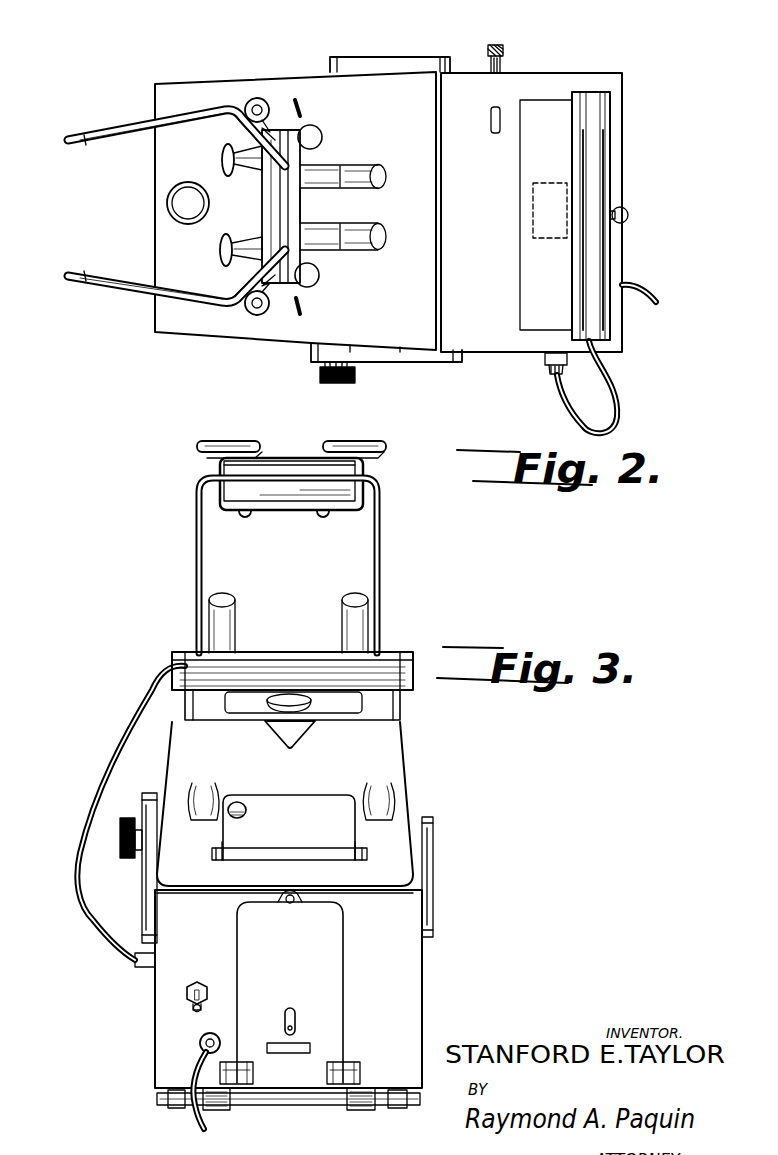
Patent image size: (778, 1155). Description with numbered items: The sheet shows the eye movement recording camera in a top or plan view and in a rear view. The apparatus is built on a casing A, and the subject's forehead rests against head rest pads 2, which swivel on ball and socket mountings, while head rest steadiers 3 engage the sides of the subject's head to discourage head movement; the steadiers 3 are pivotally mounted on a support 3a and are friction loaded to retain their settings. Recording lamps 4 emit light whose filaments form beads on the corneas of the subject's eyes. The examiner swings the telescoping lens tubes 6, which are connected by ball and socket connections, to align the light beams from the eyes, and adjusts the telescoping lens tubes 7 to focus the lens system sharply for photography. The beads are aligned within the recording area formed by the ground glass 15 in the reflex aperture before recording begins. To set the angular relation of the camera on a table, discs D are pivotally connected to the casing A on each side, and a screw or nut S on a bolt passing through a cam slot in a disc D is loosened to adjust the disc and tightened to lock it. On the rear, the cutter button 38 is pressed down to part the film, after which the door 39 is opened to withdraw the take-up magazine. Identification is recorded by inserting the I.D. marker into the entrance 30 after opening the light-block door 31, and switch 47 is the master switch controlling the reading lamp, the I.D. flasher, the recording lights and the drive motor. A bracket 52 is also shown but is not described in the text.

In FIG. 2, the disc D is at (392, 66).
In FIG. 3, the disc D is at (148, 878).
In FIG. 2, the casing A is at (381, 313).
In FIG. 3, the casing A is at (401, 863).
In FIG. 2, the screw or nut S is at (318, 375).
In FIG. 3, the screw or nut S is at (128, 817).
In FIG. 2, the head rest pad 2 is at (221, 157).
In FIG. 3, the head rest pad 2 is at (321, 524).
In FIG. 2, the head rest steadier 3 is at (116, 127).
In FIG. 3, the head rest steadier 3 is at (225, 442).
In FIG. 2, the support 3a is at (278, 196).
In FIG. 3, the support 3a is at (283, 468).
In FIG. 2, the recording lamp 4 is at (316, 133).
In FIG. 3, the recording lamp 4 is at (347, 613).
In FIG. 2, the telescoping lens tube 6 is at (357, 176).
In FIG. 2, the telescoping lens tube 7 is at (318, 186).
In FIG. 2, the ground glass 15 is at (550, 210).
In FIG. 2, the slide bar / bracket 52 is at (590, 123).
In FIG. 3, the slide bar / bracket 52 is at (377, 667).
In FIG. 3, the cutter button 38 is at (243, 803).
In FIG. 3, the door 39 is at (302, 938).
In FIG. 3, the switch 47 is at (188, 1005).
In FIG. 3, the entrance 30 is at (278, 1045).
In FIG. 3, the light-block door 31 is at (295, 1028).